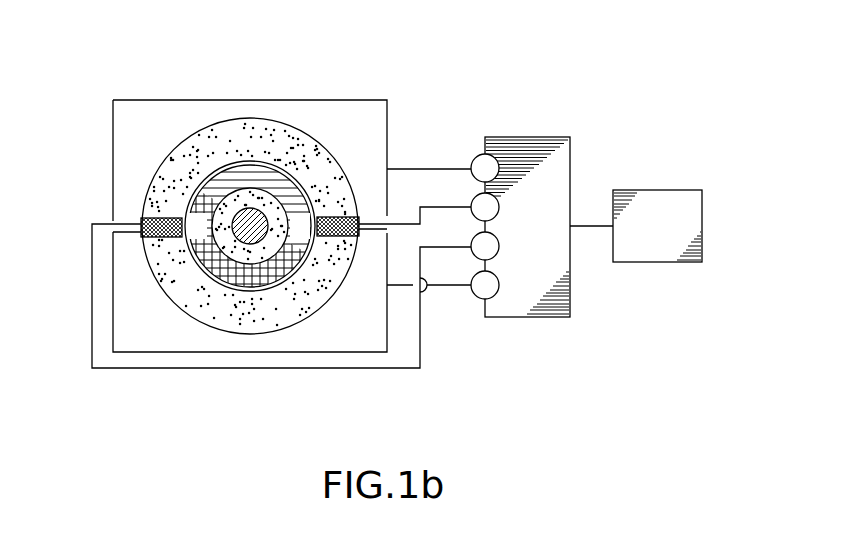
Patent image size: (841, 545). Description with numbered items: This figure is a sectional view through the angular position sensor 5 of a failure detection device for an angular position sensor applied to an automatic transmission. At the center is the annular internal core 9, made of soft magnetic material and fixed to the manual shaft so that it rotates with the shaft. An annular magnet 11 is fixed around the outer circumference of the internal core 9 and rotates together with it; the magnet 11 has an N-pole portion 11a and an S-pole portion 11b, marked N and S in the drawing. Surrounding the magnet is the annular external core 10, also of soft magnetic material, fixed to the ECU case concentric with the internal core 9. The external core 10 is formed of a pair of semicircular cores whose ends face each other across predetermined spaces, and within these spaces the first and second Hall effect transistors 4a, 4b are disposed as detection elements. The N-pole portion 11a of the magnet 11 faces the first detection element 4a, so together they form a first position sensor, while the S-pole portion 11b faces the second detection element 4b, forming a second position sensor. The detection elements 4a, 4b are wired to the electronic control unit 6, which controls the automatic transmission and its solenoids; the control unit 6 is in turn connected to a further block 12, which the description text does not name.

The first Hall effect transistor 4a is at (343, 203).
The second Hall effect transistor 4b is at (159, 238).
The angular position sensor 5 is at (329, 142).
The electronic control unit 6 is at (540, 147).
The internal core 9 is at (246, 200).
The external core 10 is at (172, 176).
The magnet 11 is at (338, 412).
The N-pole portion 11a is at (283, 261).
The S-pole portion 11b is at (242, 282).
The control unit 12 is at (649, 190).